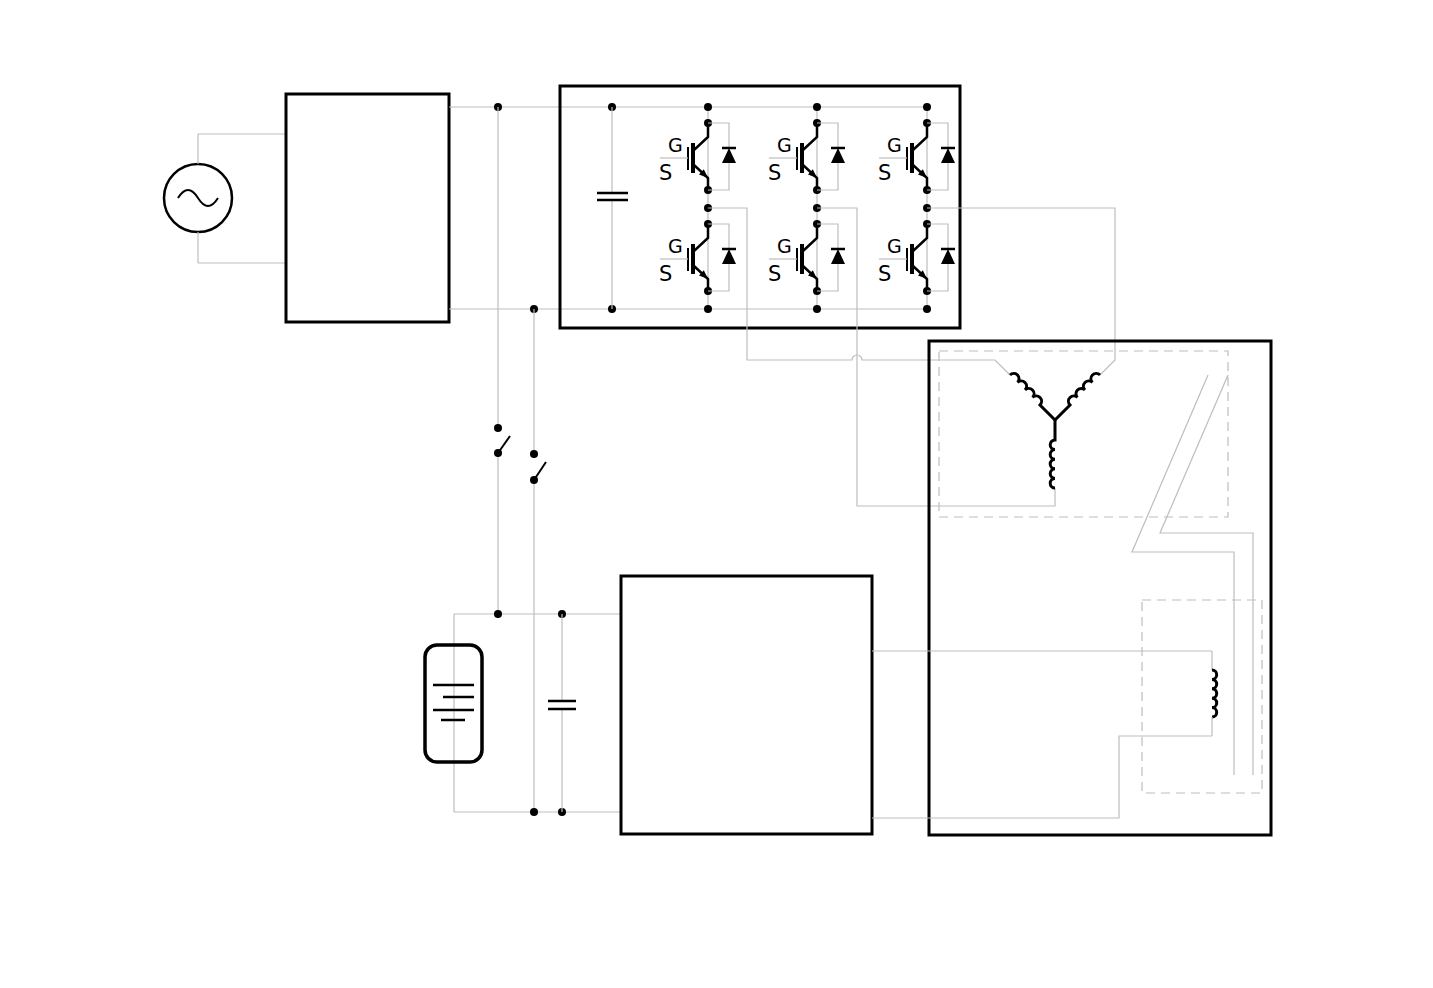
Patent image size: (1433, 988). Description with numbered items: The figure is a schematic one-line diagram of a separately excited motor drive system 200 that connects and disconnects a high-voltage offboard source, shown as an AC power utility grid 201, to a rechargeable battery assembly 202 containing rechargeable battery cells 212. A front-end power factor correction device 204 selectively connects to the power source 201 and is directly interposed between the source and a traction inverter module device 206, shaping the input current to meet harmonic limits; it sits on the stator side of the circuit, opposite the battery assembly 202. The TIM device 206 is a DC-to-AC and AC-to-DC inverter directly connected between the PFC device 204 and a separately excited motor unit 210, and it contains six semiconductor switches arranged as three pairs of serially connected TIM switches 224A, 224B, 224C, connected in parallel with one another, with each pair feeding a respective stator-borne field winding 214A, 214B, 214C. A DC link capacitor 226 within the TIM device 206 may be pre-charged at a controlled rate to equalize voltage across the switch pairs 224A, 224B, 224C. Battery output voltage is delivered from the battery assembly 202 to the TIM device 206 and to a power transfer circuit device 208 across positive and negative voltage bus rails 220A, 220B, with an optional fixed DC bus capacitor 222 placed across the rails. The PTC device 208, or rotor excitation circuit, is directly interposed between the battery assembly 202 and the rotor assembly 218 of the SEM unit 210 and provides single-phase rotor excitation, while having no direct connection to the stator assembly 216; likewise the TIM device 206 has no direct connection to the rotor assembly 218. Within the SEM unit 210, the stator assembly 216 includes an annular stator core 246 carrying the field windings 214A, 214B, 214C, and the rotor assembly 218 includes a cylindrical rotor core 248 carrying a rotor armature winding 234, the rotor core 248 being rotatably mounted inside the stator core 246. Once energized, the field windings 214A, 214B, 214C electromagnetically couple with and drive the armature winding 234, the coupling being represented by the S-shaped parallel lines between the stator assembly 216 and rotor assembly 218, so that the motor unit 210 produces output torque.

The SEM drive system 200 is at (1345, 186).
The AC power utility grid 201 is at (170, 177).
The power factor correction (PFC) device 204 is at (311, 94).
The traction inverter module (TIM) device 206 is at (596, 87).
The power transfer circuit (PTC) device 208 is at (691, 576).
The separately excited motor (SEM) unit 210 is at (1252, 341).
The rechargeable battery cells 212 is at (432, 694).
The rechargeable battery assembly 202 is at (431, 647).
The stator-borne field winding 214A is at (1033, 397).
The stator-borne field winding 214B is at (1050, 477).
The stator-borne field winding 214C is at (1077, 397).
The stator assembly 216 is at (1183, 351).
The rotor assembly 218 is at (1262, 620).
The positive voltage bus rail 220A is at (469, 613).
The negative voltage bus rail 220B is at (468, 812).
The DC bus capacitor 222 is at (577, 697).
The pair of serially connected TIM switches 224A is at (695, 107).
The pair of serially connected TIM switches 224B is at (803, 107).
The pair of serially connected TIM switches 224C is at (913, 107).
The DC link capacitor 226 is at (603, 190).
The rotor armature winding 234 is at (1208, 690).
The stator core 246 is at (1210, 470).
The rotor core 248 is at (1198, 760).